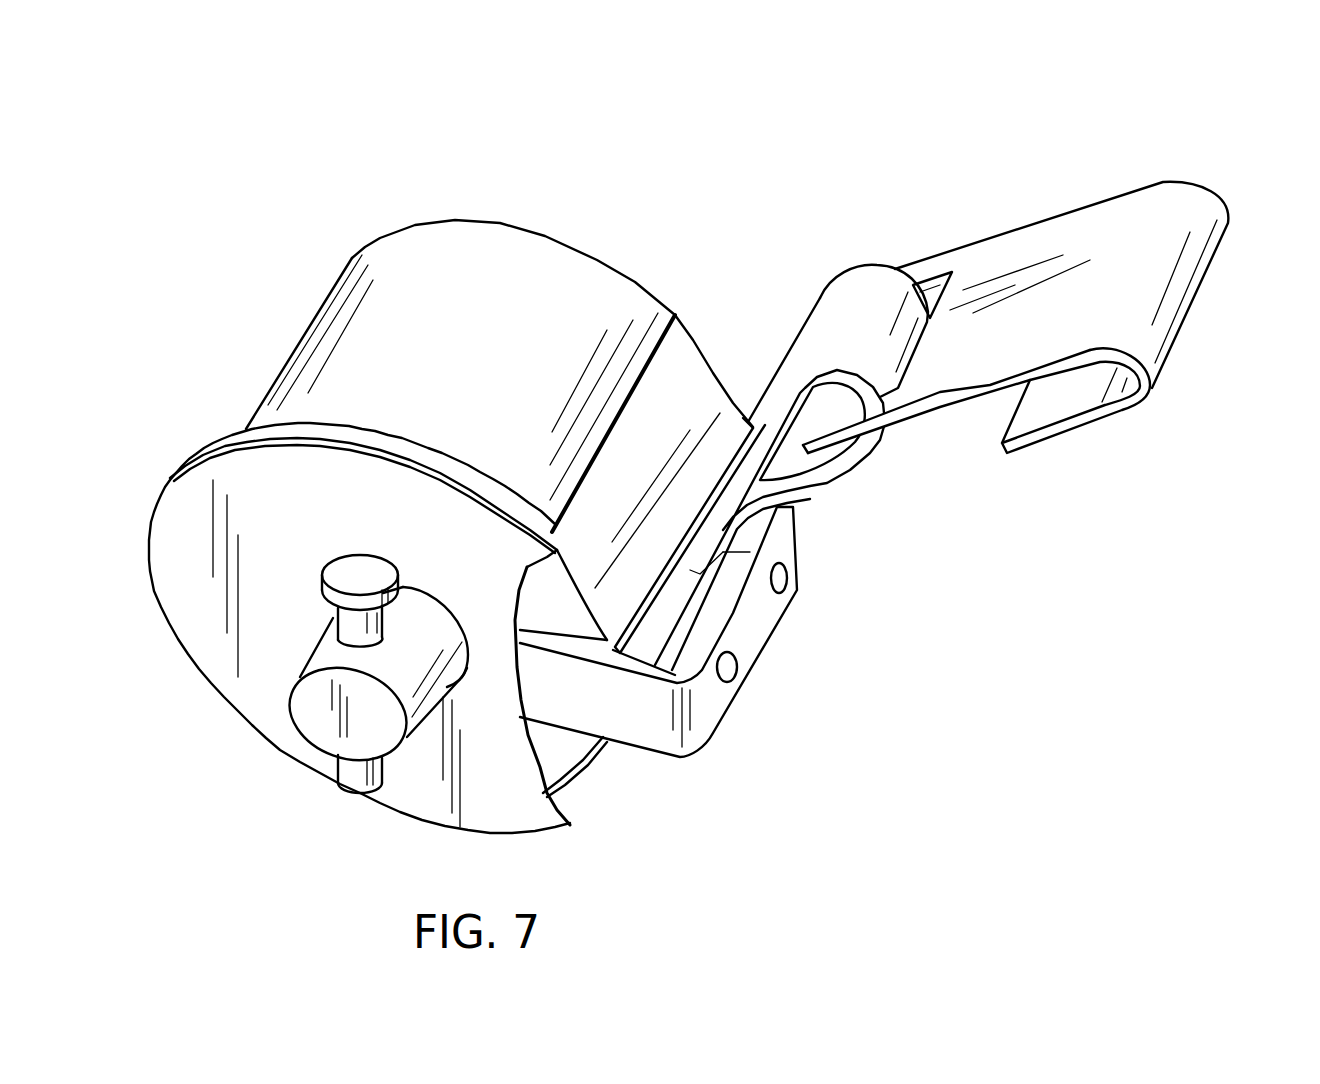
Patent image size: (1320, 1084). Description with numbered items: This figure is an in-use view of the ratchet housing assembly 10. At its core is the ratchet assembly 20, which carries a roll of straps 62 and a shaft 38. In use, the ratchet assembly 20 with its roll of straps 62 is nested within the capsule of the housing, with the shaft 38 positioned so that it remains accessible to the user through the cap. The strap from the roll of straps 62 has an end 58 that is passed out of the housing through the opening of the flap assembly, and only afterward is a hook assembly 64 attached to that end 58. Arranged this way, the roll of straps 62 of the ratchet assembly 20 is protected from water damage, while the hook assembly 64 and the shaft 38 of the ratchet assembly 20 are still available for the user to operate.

The ratchet housing assembly 10 is at (455, 150).
The ratchet assembly 20 is at (743, 650).
The shaft 38 is at (325, 720).
The end 58 is at (858, 315).
The roll of straps 62 is at (845, 477).
The hook assembly 64 is at (1122, 217).